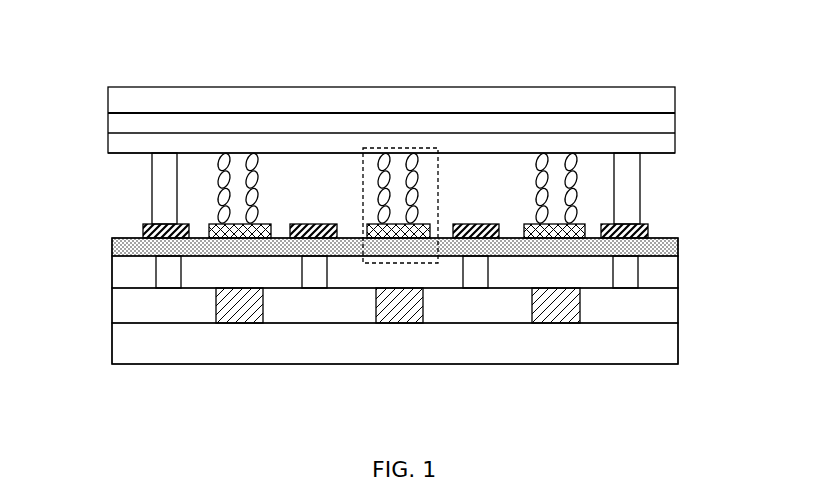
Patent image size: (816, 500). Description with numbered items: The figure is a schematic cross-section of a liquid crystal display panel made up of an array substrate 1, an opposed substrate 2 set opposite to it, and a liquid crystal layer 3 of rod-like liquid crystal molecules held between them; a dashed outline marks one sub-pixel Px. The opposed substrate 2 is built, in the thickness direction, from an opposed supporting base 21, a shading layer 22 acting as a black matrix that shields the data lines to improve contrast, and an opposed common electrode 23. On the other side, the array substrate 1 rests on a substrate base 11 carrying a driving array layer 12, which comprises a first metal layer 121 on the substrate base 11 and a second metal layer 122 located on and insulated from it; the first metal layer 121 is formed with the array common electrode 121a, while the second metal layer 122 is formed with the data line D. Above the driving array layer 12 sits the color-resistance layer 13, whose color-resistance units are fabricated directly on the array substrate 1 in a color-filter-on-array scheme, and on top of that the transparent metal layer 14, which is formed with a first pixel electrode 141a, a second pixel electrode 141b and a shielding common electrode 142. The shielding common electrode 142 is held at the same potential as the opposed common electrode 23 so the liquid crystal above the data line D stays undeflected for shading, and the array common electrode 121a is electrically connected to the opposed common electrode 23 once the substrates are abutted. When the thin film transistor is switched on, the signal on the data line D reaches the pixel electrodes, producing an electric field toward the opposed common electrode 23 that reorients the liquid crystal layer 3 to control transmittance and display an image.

The array substrate 1 is at (447, 316).
The opposed substrate 2 is at (420, 91).
The liquid crystal layer 3 is at (228, 155).
The sub-pixel Px is at (400, 148).
The substrate base 11 is at (678, 352).
The driving array layer 12 is at (447, 327).
The first metal layer 121 is at (425, 344).
The array common electrode 121a is at (238, 307).
The second metal layer 122 is at (425, 327).
The data line D is at (315, 272).
The color-resistance layer 13 is at (678, 247).
The transparent metal layer 14 is at (330, 195).
The first pixel electrode 141a is at (210, 232).
The second pixel electrode 141b is at (367, 229).
The shielding common electrode 142 is at (143, 228).
The opposed supporting base 21 is at (675, 103).
The shading layer 22 is at (675, 126).
The opposed common electrode 23 is at (675, 147).